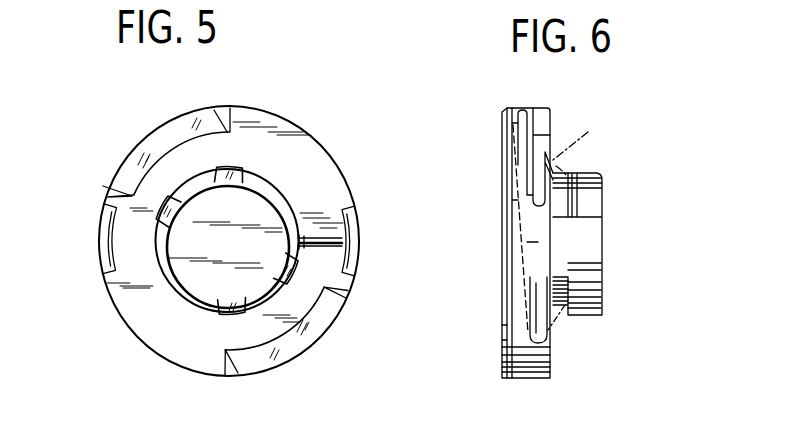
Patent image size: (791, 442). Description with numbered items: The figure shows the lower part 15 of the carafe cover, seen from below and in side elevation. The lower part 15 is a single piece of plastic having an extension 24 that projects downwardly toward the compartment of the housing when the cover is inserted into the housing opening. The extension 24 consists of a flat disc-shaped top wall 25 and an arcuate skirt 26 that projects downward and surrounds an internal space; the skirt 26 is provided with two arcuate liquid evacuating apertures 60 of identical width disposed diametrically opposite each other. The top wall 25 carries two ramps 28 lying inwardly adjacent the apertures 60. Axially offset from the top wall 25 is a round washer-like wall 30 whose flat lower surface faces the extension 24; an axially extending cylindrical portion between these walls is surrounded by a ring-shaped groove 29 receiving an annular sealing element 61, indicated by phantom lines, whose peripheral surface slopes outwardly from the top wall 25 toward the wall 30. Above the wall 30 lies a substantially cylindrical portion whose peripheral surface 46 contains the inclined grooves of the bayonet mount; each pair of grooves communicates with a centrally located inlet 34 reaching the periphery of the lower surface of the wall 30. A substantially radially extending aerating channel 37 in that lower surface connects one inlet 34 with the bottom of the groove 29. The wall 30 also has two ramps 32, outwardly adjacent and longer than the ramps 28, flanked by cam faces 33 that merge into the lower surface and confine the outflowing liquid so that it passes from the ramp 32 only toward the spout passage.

In FIG. 5, the lower part 15 is at (348, 137).
In FIG. 6, the lower part 15 is at (563, 115).
In FIG. 5, the extension 24 is at (157, 281).
In FIG. 6, the extension 24 is at (603, 167).
In FIG. 5, the top wall 25 is at (245, 213).
In FIG. 5, the arcuate skirt 26 is at (190, 305).
In FIG. 6, the arcuate skirt 26 is at (592, 259).
In FIG. 5, the ramps 28 is at (230, 307).
In FIG. 6, the ring-shaped groove 29 is at (561, 310).
In FIG. 5, the washer-like wall 30 is at (320, 178).
In FIG. 5, the ramps 32 is at (183, 137).
In FIG. 5, the cam faces 33 is at (226, 122).
In FIG. 5, the inlets 34 is at (102, 223).
In FIG. 5, the aerating channel 37 is at (322, 236).
In FIG. 6, the peripheral surface 46 is at (523, 380).
In FIG. 5, the liquid evacuating apertures 60 is at (185, 180).
In FIG. 6, the sealing element 61 is at (581, 138).